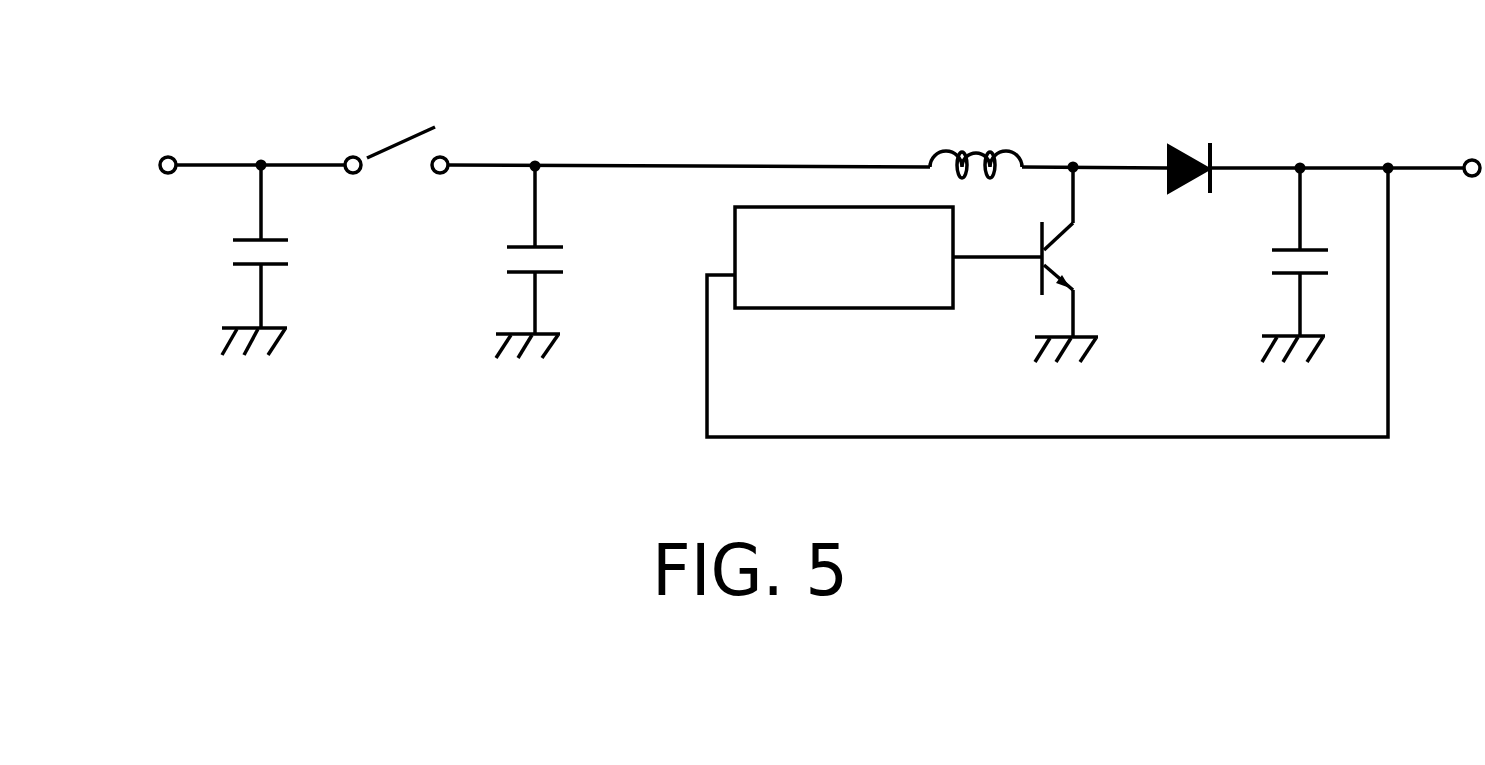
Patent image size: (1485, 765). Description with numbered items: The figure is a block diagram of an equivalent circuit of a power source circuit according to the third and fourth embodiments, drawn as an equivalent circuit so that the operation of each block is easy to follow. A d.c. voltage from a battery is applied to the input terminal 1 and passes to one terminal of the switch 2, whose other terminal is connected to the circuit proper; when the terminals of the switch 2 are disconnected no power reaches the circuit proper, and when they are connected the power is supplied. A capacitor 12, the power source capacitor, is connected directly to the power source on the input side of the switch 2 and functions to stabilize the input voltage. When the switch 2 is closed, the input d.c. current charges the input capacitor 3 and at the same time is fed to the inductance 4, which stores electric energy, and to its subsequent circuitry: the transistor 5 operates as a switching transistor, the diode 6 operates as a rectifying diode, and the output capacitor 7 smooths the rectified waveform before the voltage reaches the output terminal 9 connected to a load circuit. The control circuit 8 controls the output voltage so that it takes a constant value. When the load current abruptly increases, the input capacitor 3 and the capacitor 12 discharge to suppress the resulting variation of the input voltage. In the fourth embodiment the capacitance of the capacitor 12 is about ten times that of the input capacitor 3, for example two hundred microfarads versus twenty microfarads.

The input terminal 1 is at (166, 176).
The power source capacitor 12 is at (232, 252).
The switch 2 is at (396, 163).
The input capacitor 3 is at (505, 256).
The inductance 4 is at (972, 148).
The transistor 5 is at (1052, 298).
The diode 6 is at (1195, 185).
The output capacitor 7 is at (1287, 283).
The control circuit 8 is at (862, 308).
The output terminal 9 is at (1470, 180).